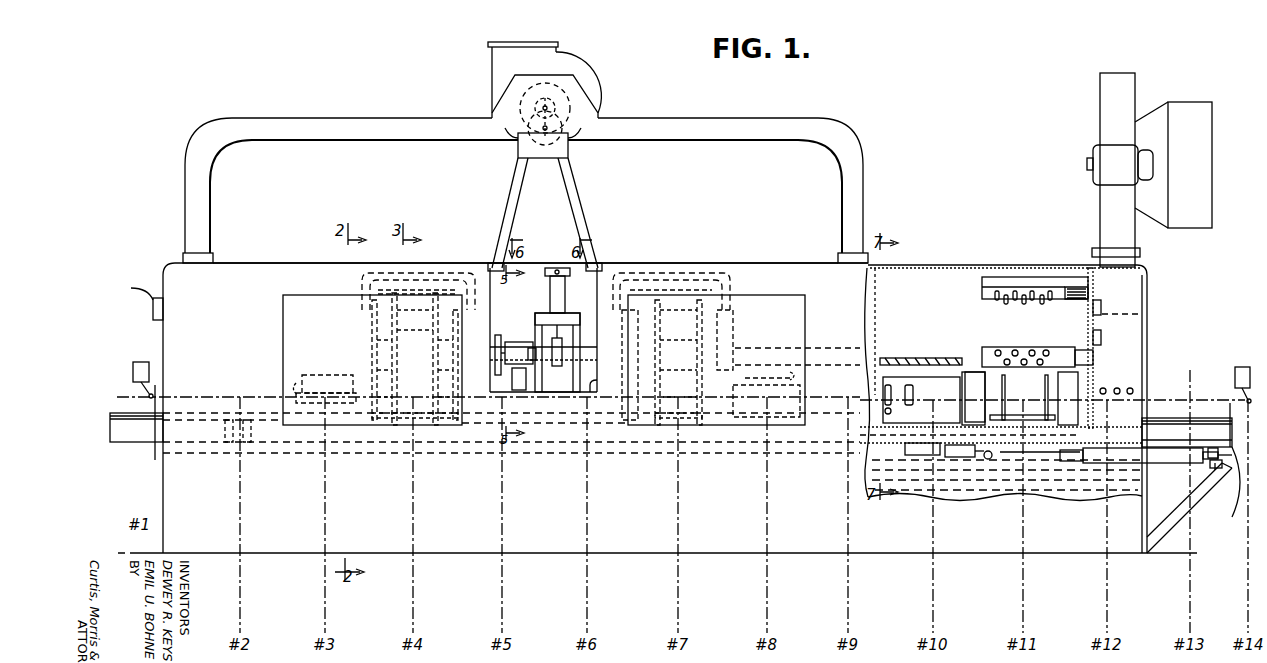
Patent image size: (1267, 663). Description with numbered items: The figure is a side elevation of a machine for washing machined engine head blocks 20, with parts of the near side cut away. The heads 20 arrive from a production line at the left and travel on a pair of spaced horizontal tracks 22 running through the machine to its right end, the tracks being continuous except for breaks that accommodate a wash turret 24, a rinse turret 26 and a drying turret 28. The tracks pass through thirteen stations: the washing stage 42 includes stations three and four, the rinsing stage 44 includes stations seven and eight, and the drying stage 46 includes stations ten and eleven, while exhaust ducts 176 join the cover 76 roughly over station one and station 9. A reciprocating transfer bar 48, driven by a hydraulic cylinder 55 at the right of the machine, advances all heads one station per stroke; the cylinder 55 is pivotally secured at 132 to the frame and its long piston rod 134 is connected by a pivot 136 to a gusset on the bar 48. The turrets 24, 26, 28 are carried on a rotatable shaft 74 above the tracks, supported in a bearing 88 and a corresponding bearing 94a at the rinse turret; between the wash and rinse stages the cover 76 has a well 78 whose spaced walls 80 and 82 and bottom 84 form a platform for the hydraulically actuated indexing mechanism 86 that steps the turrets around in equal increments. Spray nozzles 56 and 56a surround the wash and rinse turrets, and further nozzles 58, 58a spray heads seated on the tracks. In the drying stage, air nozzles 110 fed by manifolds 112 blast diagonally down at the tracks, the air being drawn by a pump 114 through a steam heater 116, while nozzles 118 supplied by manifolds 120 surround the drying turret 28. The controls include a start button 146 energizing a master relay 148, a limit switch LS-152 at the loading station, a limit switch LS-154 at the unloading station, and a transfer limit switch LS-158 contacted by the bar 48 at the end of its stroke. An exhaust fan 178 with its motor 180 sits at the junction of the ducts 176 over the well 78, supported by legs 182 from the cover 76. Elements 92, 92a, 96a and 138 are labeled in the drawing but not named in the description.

The station 9 is at (415, 364).
The engine head blocks 20 is at (182, 397).
The horizontal tracks 22 is at (112, 421).
The wash turret 24 is at (452, 291).
The rinse turret 26 is at (731, 282).
The drying turret 28 is at (1012, 402).
The washing stage 42 is at (417, 193).
The rinsing stage 44 is at (722, 226).
The drying stage 46 is at (980, 228).
The transfer bar 48 is at (1034, 437).
The hydraulic cylinder 55 is at (1177, 464).
The spray nozzles 56 is at (428, 272).
The spray nozzles 56a is at (620, 274).
The nozzles 58 is at (314, 376).
The nozzles 58a is at (800, 379).
The rotatable shaft 74 is at (489, 334).
The cover 76 is at (250, 262).
The well 78 is at (539, 246).
The wall 80 is at (497, 342).
The wall 82 is at (596, 312).
The bottom 84 is at (592, 387).
The indexing mechanism 86 is at (535, 308).
The bearing 88 is at (356, 366).
The guide post 92 is at (358, 320).
The guide post 92a is at (614, 320).
The second bearing 94a is at (737, 352).
The cross member 96a is at (678, 364).
The air nozzles 110 is at (895, 377).
The air manifolds 112 is at (920, 456).
The pump 114 is at (1102, 176).
The heater 116 is at (1202, 124).
The nozzles 118 is at (1015, 349).
The manifolds 120 is at (1062, 298).
The pivot 132 is at (1212, 466).
The piston rod 134 is at (1052, 460).
The pivot 136 is at (989, 460).
The pump 138 is at (960, 458).
The start button 146 is at (153, 306).
The master relay 148 is at (127, 288).
The limit switch LS-152 is at (140, 362).
The limit switch LS-154 is at (1242, 367).
The transfer limit switch LS-158 is at (1216, 470).
The exhaust ducts 176 is at (200, 197).
The exhaust fan 178 is at (572, 73).
The motor 180 is at (562, 128).
The legs 182 is at (504, 200).